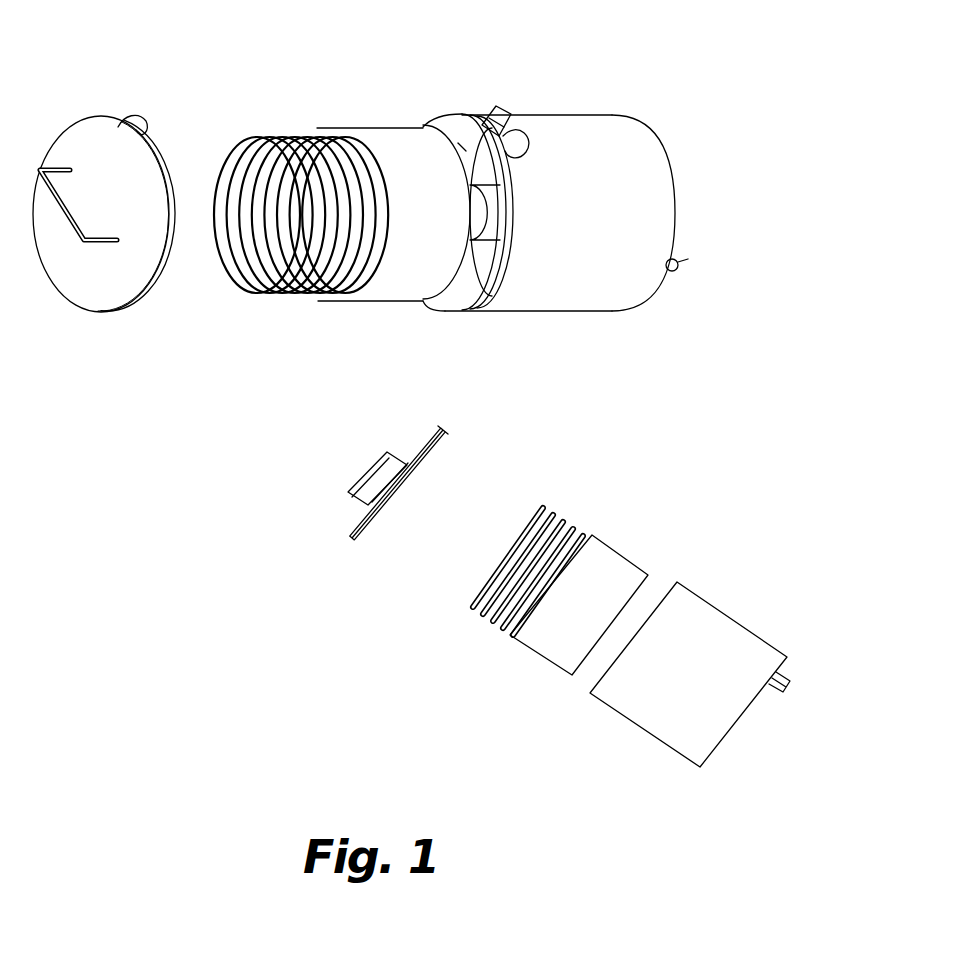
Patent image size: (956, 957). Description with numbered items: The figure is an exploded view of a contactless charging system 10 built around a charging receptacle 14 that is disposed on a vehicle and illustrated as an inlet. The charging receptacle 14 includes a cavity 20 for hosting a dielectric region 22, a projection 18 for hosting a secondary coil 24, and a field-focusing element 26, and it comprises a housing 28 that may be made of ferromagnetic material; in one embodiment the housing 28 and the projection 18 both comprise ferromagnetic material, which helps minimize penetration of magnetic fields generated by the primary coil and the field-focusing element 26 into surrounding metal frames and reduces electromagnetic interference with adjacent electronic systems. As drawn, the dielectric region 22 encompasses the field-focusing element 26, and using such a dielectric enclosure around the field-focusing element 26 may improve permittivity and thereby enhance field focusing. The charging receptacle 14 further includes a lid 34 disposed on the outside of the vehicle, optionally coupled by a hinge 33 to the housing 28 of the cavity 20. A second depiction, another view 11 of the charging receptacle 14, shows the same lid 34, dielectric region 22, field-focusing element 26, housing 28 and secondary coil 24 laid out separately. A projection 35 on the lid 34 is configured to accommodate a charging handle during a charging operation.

The contactless charging system 10 is at (702, 97).
The another view of the charging receptacle 11 is at (742, 478).
The charging receptacle 14 is at (486, 323).
The projection 18 is at (497, 227).
The cavity 20 is at (450, 120).
The dielectric region 22 is at (375, 138).
The secondary coil 24 is at (688, 259).
The field-focusing element 26 is at (297, 133).
The housing 28 is at (552, 128).
The hinge 33 is at (140, 125).
The lid 34 is at (80, 143).
The projection on the lid 35 is at (384, 525).